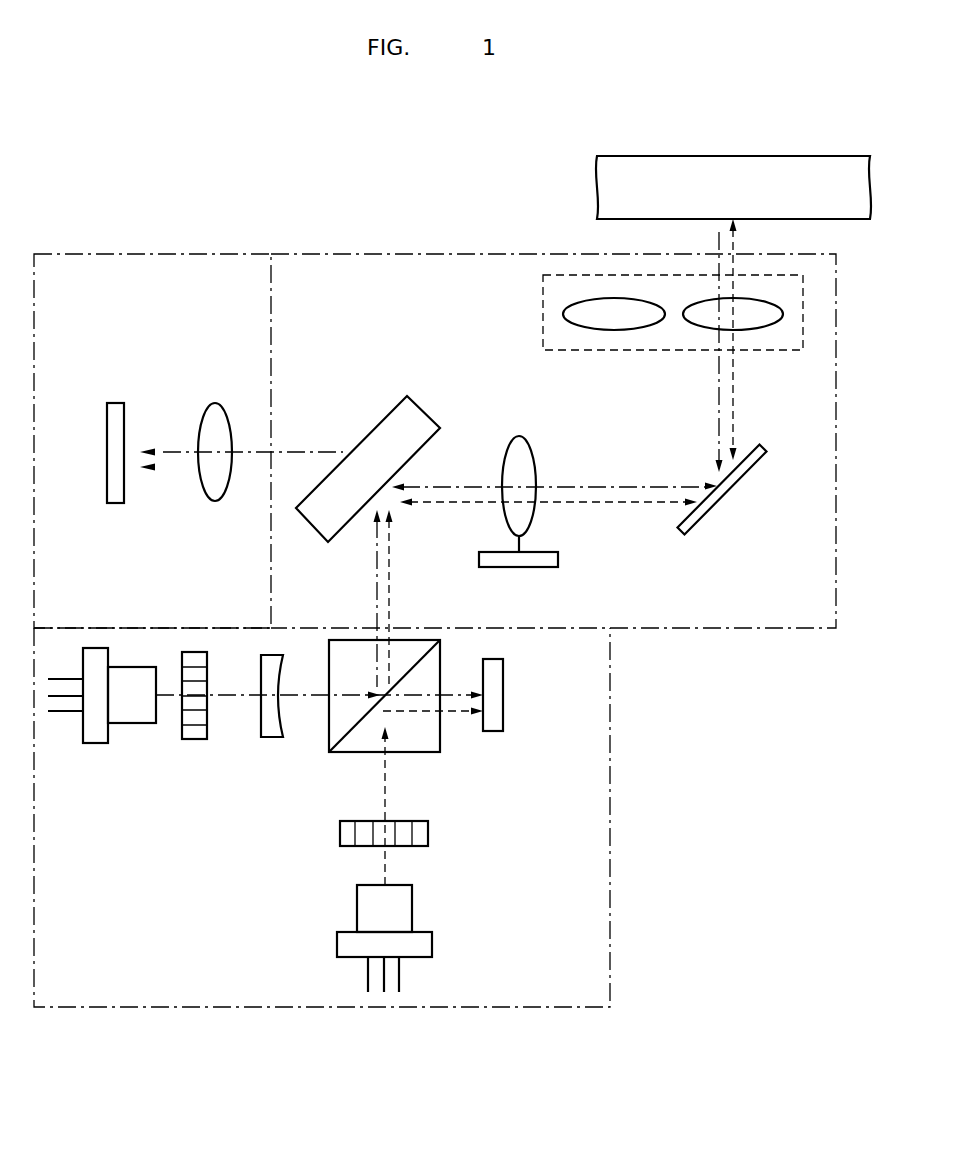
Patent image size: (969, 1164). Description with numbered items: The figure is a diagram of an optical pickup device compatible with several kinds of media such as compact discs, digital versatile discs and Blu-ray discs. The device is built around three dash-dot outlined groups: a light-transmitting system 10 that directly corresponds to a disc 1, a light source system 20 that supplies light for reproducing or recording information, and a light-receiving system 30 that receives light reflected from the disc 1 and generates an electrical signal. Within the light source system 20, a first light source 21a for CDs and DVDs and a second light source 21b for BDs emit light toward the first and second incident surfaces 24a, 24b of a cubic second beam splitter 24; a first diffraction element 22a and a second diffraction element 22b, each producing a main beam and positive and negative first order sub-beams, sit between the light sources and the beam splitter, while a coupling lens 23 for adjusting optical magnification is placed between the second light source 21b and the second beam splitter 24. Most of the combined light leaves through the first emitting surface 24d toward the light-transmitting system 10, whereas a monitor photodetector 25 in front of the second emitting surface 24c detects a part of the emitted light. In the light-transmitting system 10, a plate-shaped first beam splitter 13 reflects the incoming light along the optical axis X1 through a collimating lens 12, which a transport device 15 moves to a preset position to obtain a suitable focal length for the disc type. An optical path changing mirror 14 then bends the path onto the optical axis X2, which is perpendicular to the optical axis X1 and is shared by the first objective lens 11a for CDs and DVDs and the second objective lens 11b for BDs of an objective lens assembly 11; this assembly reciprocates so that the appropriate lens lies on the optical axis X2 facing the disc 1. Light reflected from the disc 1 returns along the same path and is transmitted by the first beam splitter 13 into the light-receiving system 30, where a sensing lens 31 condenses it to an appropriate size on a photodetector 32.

The disc 1 is at (597, 186).
The light-transmitting system 10 is at (366, 254).
The objective lens assembly 11 is at (630, 338).
The first objective lens 11a is at (611, 330).
The second objective lens 11b is at (764, 330).
The collimating lens 12 is at (519, 436).
The first beam splitter 13 is at (385, 427).
The optical path changing mirror 14 is at (728, 495).
The transport device 15 is at (519, 567).
The light source system 20 is at (322, 1007).
The first light source 21a is at (432, 945).
The second light source 21b is at (93, 743).
The first diffraction element 22a is at (428, 833).
The second diffraction element 22b is at (193, 739).
The coupling lens 23 is at (269, 737).
The second beam splitter 24 is at (375, 711).
The first incident surface 24a is at (418, 752).
The second incident surface 24b is at (329, 662).
The second emitting surface 24c is at (442, 729).
The first emitting surface 24d is at (415, 640).
The monitor photodetector 25 is at (503, 695).
The light-receiving system 30 is at (150, 253).
The sensing lens 31 is at (215, 403).
The photodetector 32 is at (110, 402).
The optical axis X1 is at (612, 502).
The optical axis X2 is at (719, 396).